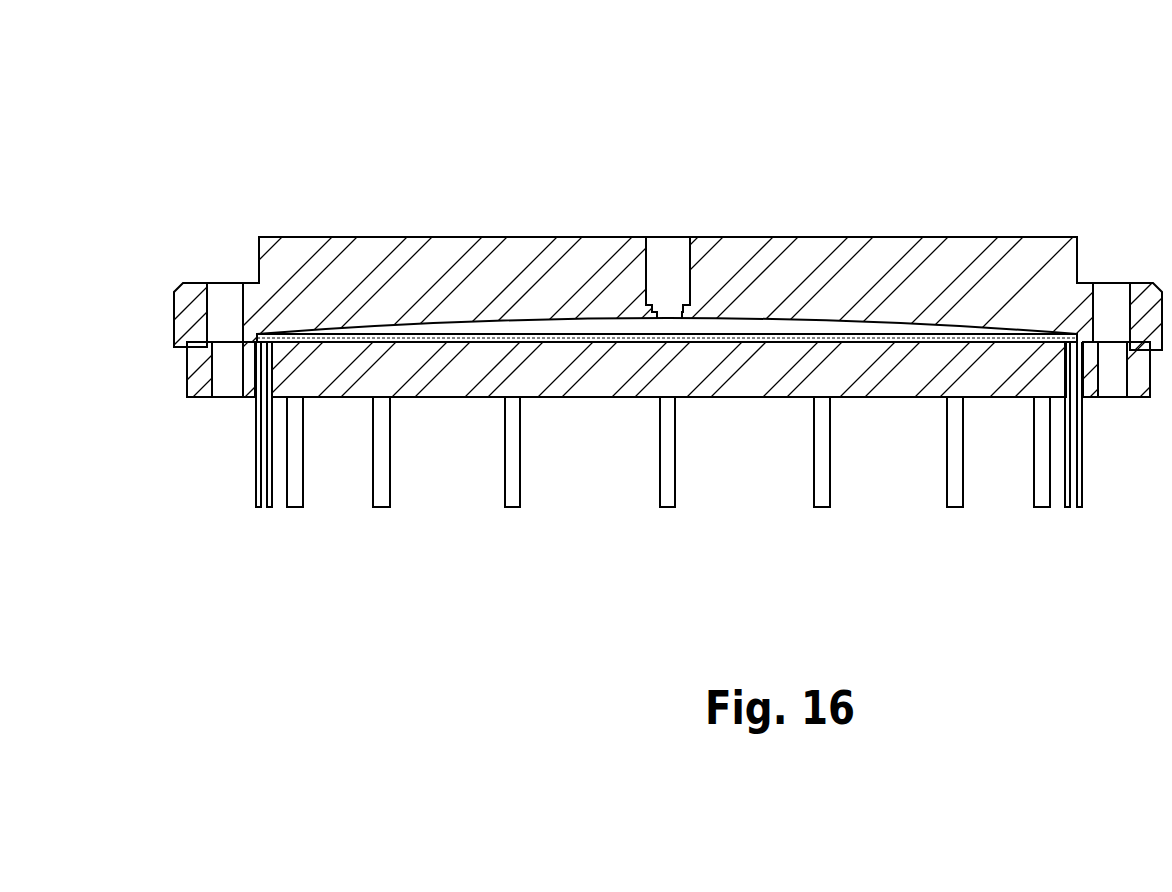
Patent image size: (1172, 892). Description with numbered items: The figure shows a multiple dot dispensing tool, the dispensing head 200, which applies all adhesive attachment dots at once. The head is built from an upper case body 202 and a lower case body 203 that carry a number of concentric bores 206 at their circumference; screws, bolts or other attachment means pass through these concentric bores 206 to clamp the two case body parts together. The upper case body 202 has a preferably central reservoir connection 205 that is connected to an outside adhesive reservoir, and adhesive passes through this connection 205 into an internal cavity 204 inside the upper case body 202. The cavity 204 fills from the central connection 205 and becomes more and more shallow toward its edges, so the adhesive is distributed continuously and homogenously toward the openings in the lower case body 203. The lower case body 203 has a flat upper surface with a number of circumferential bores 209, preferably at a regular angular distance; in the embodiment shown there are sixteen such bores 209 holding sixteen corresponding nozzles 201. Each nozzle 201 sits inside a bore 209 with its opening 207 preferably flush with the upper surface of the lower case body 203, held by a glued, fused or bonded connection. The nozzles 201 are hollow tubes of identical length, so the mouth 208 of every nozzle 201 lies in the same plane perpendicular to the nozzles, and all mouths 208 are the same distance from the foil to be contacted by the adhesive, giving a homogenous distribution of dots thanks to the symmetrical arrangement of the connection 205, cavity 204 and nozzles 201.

The dispensing head 200 is at (395, 107).
The nozzles 201 is at (380, 483).
The upper case body 202 is at (312, 257).
The lower case body 203 is at (478, 372).
The internal cavity 204 is at (703, 323).
The reservoir connection 205 is at (673, 265).
The concentric bores 206 is at (1117, 310).
The opening 207 is at (259, 348).
The mouth 208 is at (1077, 512).
The circumferential bores 209 is at (1064, 376).